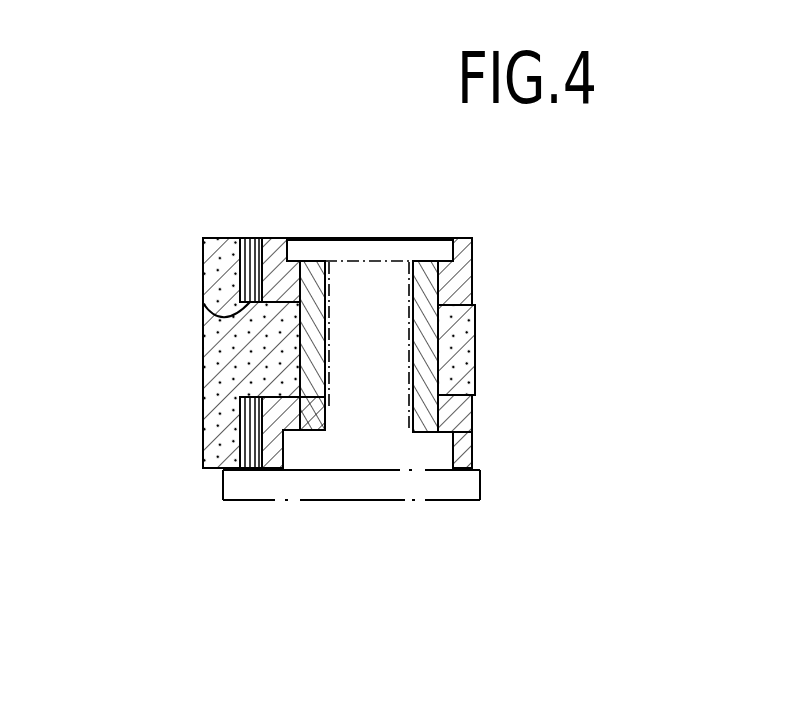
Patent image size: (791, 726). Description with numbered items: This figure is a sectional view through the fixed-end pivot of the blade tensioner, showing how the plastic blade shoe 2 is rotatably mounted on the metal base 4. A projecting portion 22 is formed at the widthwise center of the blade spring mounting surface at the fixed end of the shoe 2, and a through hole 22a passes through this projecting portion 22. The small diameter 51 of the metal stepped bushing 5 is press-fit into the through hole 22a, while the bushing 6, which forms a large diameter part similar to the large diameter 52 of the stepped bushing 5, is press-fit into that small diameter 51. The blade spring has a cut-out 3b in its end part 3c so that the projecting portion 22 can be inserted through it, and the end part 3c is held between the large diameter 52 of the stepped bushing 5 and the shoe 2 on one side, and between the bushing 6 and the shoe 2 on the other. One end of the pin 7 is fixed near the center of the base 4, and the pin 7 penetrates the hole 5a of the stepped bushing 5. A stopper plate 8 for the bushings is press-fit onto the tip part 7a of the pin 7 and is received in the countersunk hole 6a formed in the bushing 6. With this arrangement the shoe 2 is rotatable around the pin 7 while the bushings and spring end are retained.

The blade shoe 2 is at (203, 363).
The cut-out 3b is at (203, 310).
The end part 3c is at (248, 238).
The base 4 is at (457, 503).
The stepped bushing 5 is at (560, 360).
The hole 5a is at (329, 407).
The bushing 6 is at (472, 272).
The countersunk hole 6a is at (297, 238).
The pin 7 is at (370, 453).
The tip part 7a is at (375, 238).
The stopper plate 8 is at (438, 238).
The projecting portion 22 is at (462, 320).
The through hole 22a is at (457, 347).
The small diameter 51 is at (440, 378).
The large diameter 52 is at (468, 428).